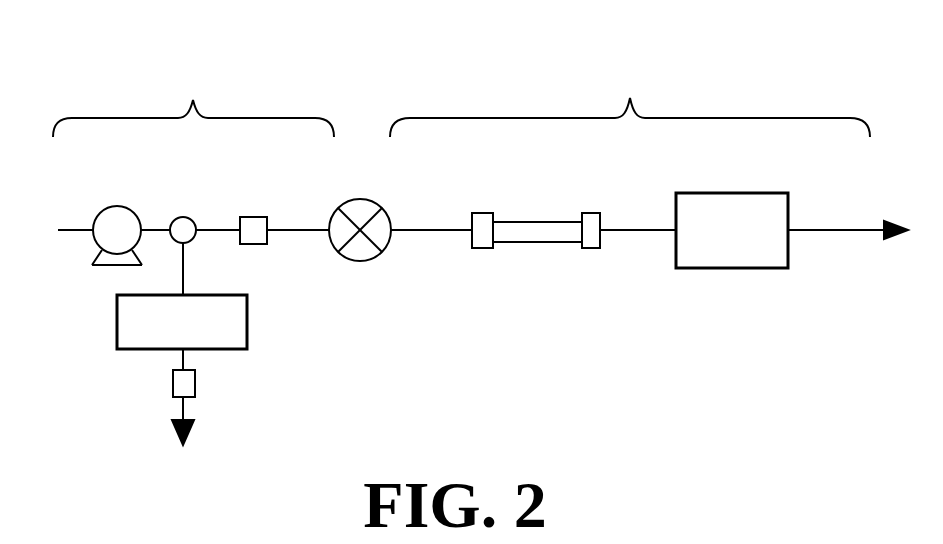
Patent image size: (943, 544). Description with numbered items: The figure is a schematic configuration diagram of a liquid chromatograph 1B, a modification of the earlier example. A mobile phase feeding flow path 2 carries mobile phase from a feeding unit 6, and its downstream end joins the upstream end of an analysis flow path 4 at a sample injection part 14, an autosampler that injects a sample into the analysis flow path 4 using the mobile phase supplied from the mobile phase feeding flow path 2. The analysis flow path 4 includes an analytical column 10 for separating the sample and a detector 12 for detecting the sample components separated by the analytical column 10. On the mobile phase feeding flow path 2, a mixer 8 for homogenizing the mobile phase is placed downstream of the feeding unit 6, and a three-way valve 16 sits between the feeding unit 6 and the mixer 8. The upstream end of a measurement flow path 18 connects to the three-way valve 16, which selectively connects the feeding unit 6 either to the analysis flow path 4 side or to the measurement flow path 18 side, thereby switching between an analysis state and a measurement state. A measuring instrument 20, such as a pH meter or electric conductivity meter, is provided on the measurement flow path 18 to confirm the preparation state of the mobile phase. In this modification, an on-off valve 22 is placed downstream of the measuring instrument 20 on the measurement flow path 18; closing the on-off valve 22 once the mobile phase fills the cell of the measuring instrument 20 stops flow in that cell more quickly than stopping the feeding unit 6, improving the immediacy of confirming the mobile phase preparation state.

The liquid chromatograph 1B is at (88, 40).
The mobile phase feeding flow path 2 is at (193, 99).
The analysis flow path 4 is at (630, 99).
The feeding unit 6 is at (131, 208).
The mixer 8 is at (266, 217).
The analytical column 10 is at (541, 222).
The detector 12 is at (788, 203).
The sample injection part 14 is at (360, 199).
The three-way valve 16 is at (186, 216).
The measurement flow path 18 is at (183, 353).
The measuring instrument 20 is at (248, 312).
The on-off valve 22 is at (196, 384).